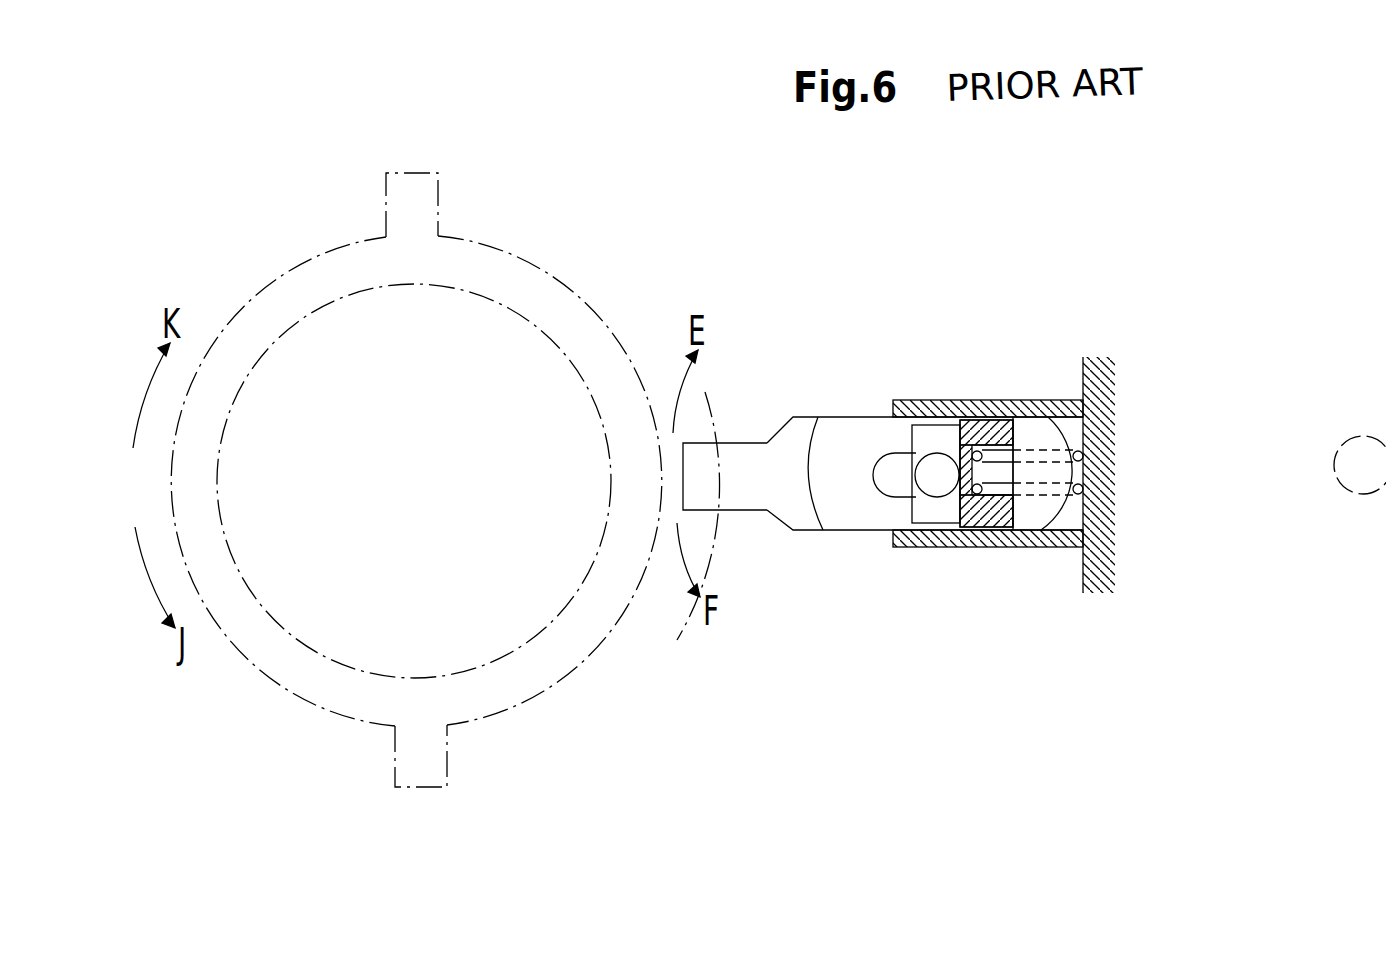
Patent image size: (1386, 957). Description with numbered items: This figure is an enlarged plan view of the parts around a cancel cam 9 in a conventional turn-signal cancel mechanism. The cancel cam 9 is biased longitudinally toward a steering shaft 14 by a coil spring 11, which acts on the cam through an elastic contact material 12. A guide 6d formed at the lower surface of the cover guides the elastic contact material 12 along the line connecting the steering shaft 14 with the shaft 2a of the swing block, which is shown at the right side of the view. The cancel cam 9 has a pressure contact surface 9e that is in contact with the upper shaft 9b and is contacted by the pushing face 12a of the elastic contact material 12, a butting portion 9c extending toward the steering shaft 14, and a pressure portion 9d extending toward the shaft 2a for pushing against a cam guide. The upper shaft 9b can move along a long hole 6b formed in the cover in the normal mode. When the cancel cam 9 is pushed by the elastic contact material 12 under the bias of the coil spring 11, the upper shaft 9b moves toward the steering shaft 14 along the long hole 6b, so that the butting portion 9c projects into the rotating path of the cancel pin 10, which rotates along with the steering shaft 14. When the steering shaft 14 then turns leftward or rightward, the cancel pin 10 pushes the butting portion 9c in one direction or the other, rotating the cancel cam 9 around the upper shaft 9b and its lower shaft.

The steering shaft 14 is at (335, 660).
The cancel pin 10 is at (423, 773).
The cancel cam 9 is at (793, 532).
The butting portion 9c is at (735, 440).
The upper shaft 9b is at (935, 480).
The pressure portion 9d is at (1047, 448).
The pressure contact surface 9e is at (968, 420).
The long hole 6b is at (872, 460).
The guide 6d is at (924, 400).
The elastic contact material 12 is at (997, 507).
The pushing face 12a is at (957, 510).
The coil spring 11 is at (1088, 448).
The shaft of the swing block 2a is at (1366, 437).